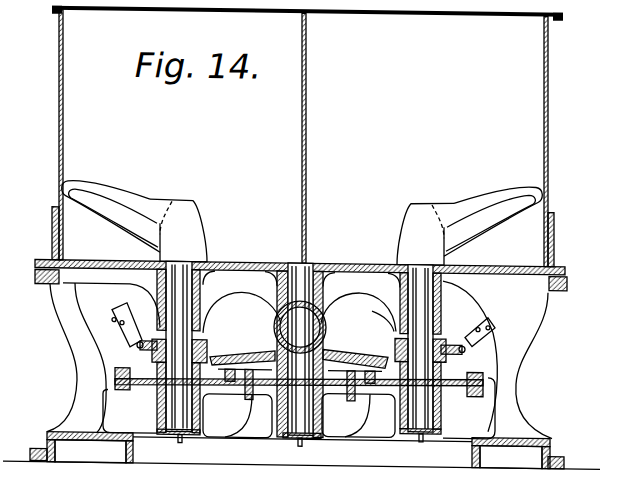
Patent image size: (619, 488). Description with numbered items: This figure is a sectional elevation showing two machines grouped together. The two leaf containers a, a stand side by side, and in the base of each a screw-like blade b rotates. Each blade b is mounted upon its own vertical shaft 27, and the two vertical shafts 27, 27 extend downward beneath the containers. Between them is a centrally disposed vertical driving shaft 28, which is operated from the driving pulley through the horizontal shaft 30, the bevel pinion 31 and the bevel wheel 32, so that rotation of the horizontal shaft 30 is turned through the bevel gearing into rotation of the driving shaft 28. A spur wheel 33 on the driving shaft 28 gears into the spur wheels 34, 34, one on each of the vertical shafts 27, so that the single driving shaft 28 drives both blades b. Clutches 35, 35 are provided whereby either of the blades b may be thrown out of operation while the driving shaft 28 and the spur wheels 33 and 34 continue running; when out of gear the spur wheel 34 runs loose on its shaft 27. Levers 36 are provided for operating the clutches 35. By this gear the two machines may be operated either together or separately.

The leaf container a is at (244, 137).
The screw-like blade b is at (186, 220).
The vertical shaft 27 is at (165, 431).
The vertical driving shaft 28 is at (285, 433).
The horizontal shaft 30 is at (278, 321).
The bevel pinion 31 is at (324, 318).
The bevel wheel 32 is at (211, 392).
The spur wheel 33 is at (352, 394).
The spur wheel 34 is at (112, 389).
The clutch 35 is at (495, 321).
The lever 36 is at (486, 313).